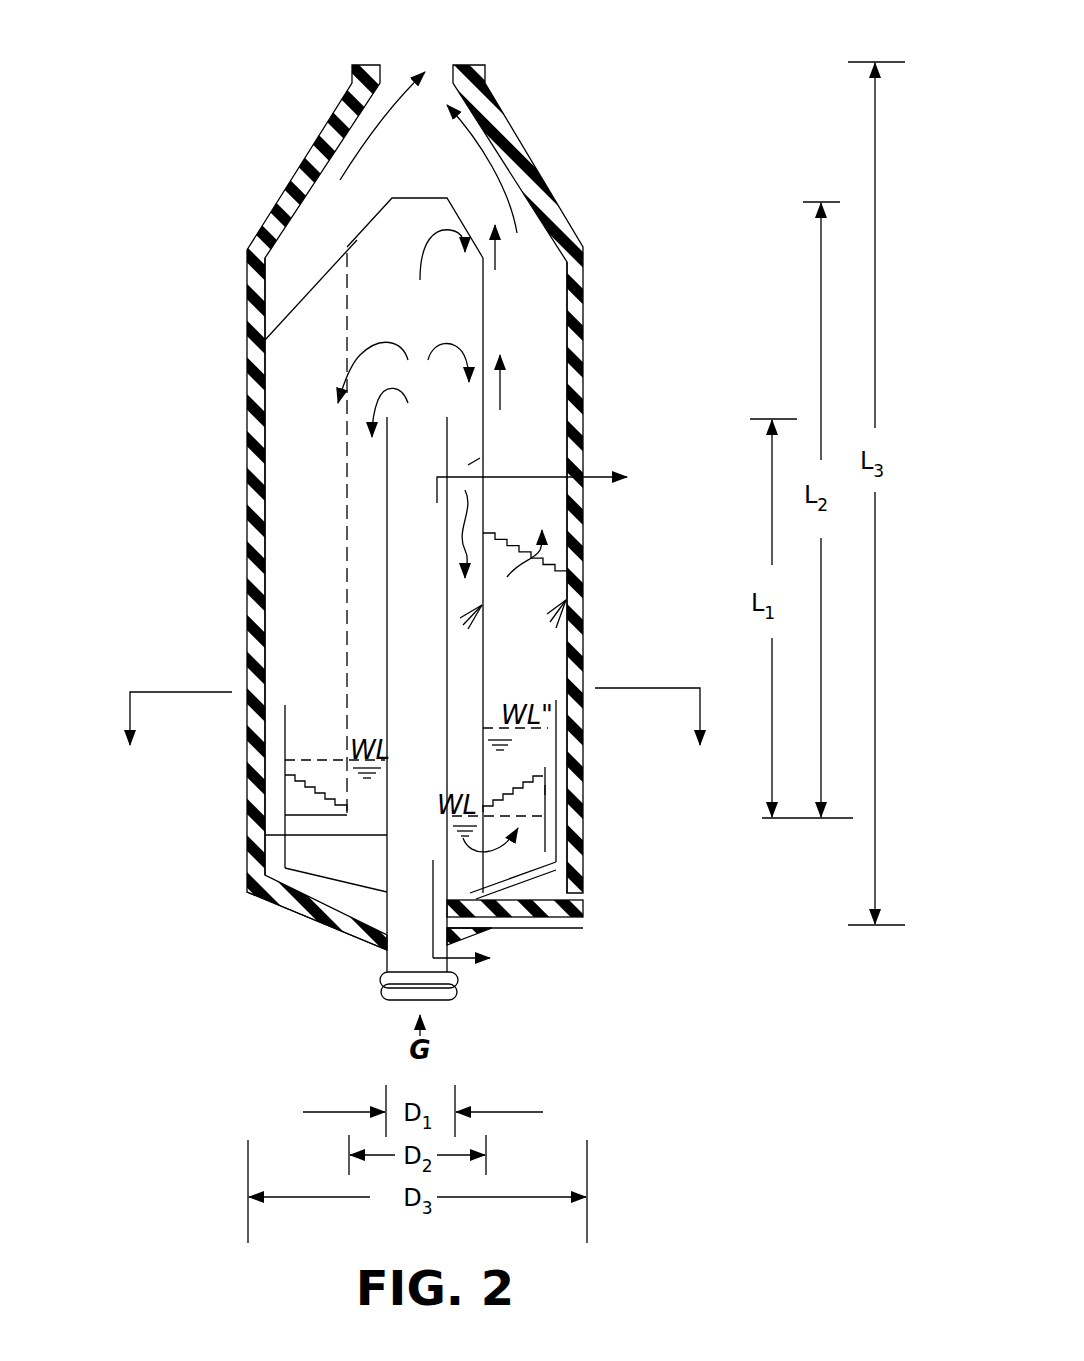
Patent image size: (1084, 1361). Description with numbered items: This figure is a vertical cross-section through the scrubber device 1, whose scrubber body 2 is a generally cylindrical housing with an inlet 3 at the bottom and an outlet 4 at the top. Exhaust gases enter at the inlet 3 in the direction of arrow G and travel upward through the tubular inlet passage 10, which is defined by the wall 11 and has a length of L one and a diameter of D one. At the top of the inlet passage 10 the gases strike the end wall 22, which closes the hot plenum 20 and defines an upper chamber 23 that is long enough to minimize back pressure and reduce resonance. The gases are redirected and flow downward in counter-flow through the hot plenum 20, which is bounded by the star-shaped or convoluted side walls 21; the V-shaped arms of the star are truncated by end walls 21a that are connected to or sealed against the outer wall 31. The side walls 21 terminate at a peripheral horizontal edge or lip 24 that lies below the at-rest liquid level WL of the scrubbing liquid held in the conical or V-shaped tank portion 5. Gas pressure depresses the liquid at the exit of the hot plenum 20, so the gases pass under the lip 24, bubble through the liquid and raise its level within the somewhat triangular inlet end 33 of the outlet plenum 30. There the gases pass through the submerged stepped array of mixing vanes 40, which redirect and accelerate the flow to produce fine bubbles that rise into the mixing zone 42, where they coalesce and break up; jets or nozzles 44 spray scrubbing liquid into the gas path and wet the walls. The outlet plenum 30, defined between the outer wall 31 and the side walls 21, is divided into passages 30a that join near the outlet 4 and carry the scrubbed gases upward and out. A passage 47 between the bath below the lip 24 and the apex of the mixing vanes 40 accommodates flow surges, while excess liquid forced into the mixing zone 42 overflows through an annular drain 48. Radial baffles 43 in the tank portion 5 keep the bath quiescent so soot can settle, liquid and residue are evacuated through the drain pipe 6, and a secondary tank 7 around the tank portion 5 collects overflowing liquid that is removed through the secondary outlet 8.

The scrubber device 1 is at (645, 257).
The scrubber body 2 is at (252, 467).
The inlet 3 is at (387, 958).
The outlet 4 is at (478, 63).
The tank portion 5 is at (360, 822).
The drain pipe 6 is at (585, 897).
The secondary tank 7 is at (355, 900).
The secondary outlet 8 is at (555, 928).
The inlet passage 10 is at (402, 538).
The wall 11 is at (448, 628).
The hot plenum 20 is at (482, 455).
The side walls 21 is at (482, 342).
The end walls 21a is at (265, 402).
The end wall 22 is at (357, 238).
The upper chamber 23 is at (447, 318).
The peripheral horizontal edge 24 is at (348, 815).
The outlet plenum 30 is at (437, 172).
The passages 30a is at (505, 517).
The outer wall 31 is at (258, 523).
The inlet end 33 is at (513, 807).
The mixing vanes 40 is at (513, 783).
The mixing zone 42 is at (537, 680).
The radial baffles 43 is at (350, 875).
The jets or nozzles 44 is at (555, 630).
The passage 47 is at (553, 787).
The annular drain 48 is at (567, 718).